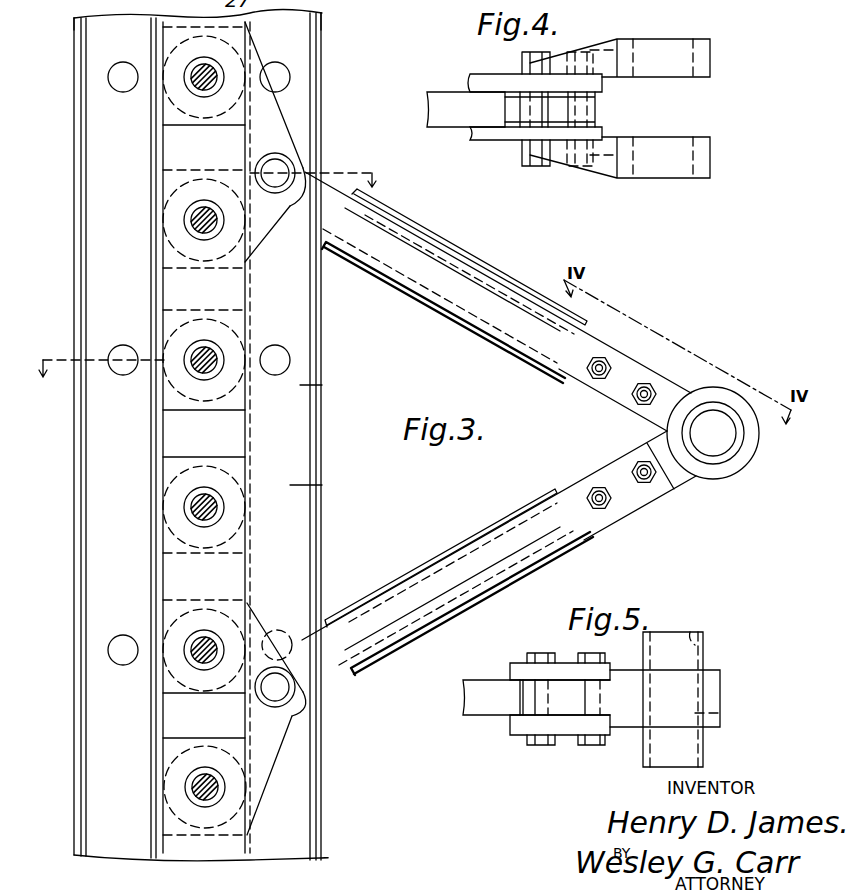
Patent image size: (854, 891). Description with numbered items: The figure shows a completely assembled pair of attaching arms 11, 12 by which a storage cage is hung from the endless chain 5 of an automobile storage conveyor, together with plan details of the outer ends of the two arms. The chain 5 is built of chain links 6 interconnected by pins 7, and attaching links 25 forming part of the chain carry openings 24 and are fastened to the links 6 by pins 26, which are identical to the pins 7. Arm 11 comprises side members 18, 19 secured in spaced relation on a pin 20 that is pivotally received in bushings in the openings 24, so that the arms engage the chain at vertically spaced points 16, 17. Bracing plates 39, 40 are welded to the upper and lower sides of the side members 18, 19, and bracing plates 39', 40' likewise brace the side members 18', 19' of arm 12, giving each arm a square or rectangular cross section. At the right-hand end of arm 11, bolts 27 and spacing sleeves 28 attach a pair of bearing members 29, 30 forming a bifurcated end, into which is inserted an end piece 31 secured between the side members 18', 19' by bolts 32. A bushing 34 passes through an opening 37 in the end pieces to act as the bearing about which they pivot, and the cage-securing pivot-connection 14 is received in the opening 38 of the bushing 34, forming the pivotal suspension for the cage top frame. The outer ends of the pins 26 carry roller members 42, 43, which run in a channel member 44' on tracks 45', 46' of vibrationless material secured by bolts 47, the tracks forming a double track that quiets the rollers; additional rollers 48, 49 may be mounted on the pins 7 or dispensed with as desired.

In FIG. 3, the chain 5 is at (165, 440).
In FIG. 3, the chain links 6 is at (165, 292).
In FIG. 3, the pins 7 is at (200, 358).
In FIG. 3, the attaching arm 11 is at (546, 338).
In FIG. 3, the attaching arm 12 is at (558, 508).
In FIG. 3, the pivot-connection 14 is at (727, 445).
In FIG. 3, the point 16 is at (300, 705).
In FIG. 3, the point 17 is at (290, 168).
In FIG. 3, the side member 18 is at (498, 301).
In FIG. 4, the side member 18 is at (466, 133).
In FIG. 3, the side member 18' is at (499, 535).
In FIG. 5, the side member 18' is at (542, 717).
In FIG. 3, the side member 19 is at (448, 289).
In FIG. 4, the side member 19 is at (521, 93).
In FIG. 3, the side member 19' is at (456, 584).
In FIG. 5, the side member 19' is at (539, 688).
In FIG. 3, the pin 20 is at (308, 172).
In FIG. 3, the openings 24 is at (258, 163).
In FIG. 3, the attaching links 25 is at (272, 122).
In FIG. 3, the pins 26 is at (195, 82).
In FIG. 3, the bolts 27 is at (645, 385).
In FIG. 4, the bolts 27 is at (572, 167).
In FIG. 4, the spacing sleeves 28 is at (585, 115).
In FIG. 4, the bearing member 29 is at (712, 58).
In FIG. 4, the bearing member 30 is at (712, 157).
In FIG. 5, the end piece 31 is at (718, 700).
In FIG. 3, the bolts 32 is at (640, 485).
In FIG. 5, the bolts 32 is at (590, 750).
In FIG. 5, the bushing 34 is at (705, 655).
In FIG. 5, the opening 37 is at (720, 718).
In FIG. 5, the opening 38 is at (693, 632).
In FIG. 3, the bracing plate 39 is at (469, 249).
In FIG. 4, the bracing plate 39 is at (511, 117).
In FIG. 3, the bracing plate 39' is at (441, 558).
In FIG. 5, the bracing plate 39' is at (471, 705).
In FIG. 3, the bracing plate 40 is at (443, 312).
In FIG. 3, the bracing plate 40' is at (472, 619).
In FIG. 3, the roller member 42 is at (163, 60).
In FIG. 3, the roller member 43 is at (201, 430).
In FIG. 3, the channel member 44' is at (337, 436).
In FIG. 3, the track member 45' is at (257, 438).
In FIG. 3, the track member 46' is at (87, 437).
In FIG. 3, the bolts 47 is at (197, 15).
In FIG. 3, the roller 48 is at (300, 388).
In FIG. 3, the roller 49 is at (290, 485).